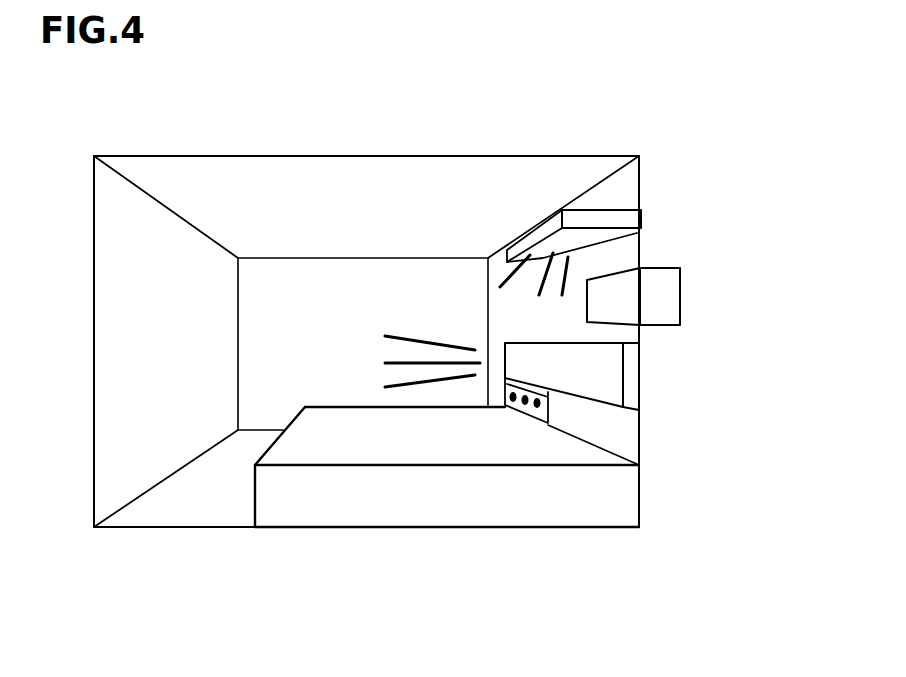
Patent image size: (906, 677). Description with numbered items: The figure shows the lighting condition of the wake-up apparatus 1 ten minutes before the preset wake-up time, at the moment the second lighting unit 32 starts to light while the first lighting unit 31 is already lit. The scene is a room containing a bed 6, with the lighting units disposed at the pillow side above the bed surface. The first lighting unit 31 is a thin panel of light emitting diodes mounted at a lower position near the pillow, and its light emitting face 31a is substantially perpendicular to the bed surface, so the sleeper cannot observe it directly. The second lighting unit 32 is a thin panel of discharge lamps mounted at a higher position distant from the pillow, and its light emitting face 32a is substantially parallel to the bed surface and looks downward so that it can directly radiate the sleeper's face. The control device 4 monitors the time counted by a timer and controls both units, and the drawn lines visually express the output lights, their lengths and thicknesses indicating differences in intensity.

The wake-up apparatus 1 is at (363, 540).
The bed 6 is at (310, 488).
The control device 4 is at (655, 268).
The first lighting unit 31 is at (643, 377).
The light emitting face of the first lighting unit 31a is at (583, 377).
The second lighting unit 32 is at (619, 210).
The light emitting face of the second lighting unit 32a is at (562, 228).